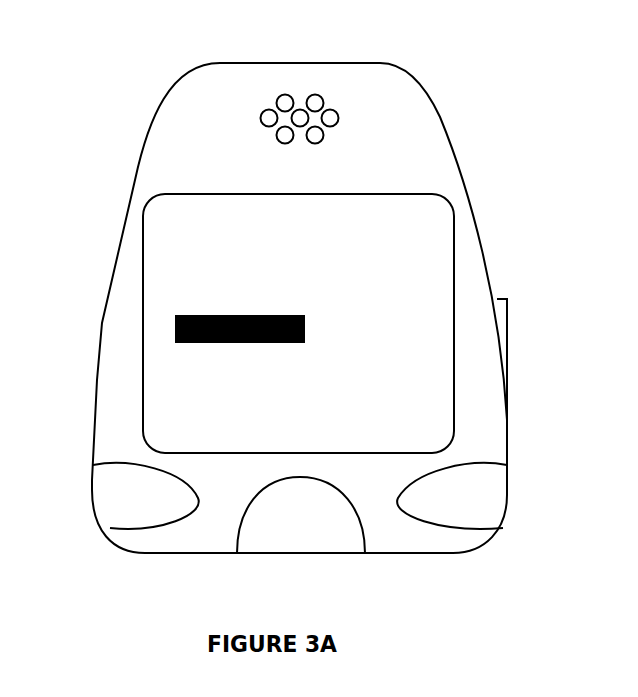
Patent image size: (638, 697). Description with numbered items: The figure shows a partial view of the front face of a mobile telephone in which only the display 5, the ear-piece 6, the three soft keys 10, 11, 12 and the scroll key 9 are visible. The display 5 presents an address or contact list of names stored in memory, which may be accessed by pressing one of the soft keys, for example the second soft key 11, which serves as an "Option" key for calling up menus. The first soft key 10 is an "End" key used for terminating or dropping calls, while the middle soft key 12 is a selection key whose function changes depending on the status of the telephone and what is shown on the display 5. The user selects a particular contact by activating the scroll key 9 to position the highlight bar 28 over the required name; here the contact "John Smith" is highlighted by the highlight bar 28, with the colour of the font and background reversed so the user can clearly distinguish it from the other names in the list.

The display 5 is at (140, 325).
The ear-piece 6 is at (312, 100).
The scroll key 9 is at (507, 352).
The first soft key 10 is at (112, 510).
The second soft key 11 is at (480, 510).
The third soft key 12 is at (340, 538).
The highlight bar 28 is at (305, 343).